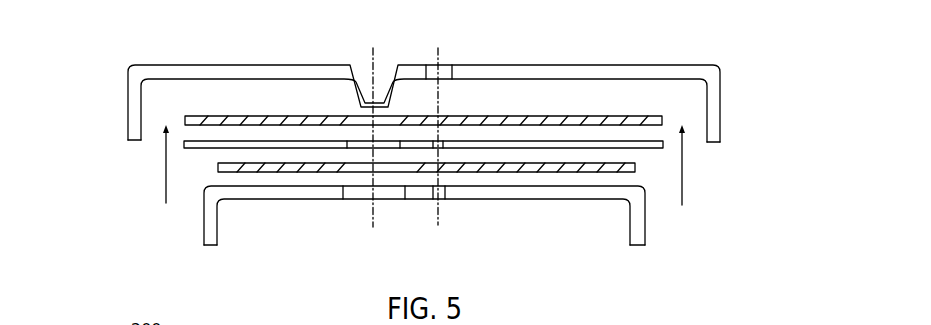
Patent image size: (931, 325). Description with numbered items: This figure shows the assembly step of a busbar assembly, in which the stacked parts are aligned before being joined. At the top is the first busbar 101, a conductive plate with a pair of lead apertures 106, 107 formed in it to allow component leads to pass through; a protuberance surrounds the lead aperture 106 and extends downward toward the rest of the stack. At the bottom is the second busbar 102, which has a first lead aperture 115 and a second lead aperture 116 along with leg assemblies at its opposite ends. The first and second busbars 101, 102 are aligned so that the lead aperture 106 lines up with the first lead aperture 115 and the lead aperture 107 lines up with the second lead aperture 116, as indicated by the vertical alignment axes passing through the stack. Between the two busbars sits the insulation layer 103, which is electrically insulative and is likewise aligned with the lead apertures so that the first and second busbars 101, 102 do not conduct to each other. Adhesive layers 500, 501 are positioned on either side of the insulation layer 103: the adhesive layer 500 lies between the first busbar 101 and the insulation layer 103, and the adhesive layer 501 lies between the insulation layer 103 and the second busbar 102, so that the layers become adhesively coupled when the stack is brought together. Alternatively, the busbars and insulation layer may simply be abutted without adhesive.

The first busbar 101 is at (110, 74).
The second busbar 102 is at (186, 211).
The insulation layer 103 is at (186, 149).
The lead aperture 106 is at (364, 52).
The lead aperture 107 is at (448, 50).
The first lead aperture 115 is at (360, 214).
The second lead aperture 116 is at (447, 214).
The adhesive layer 500 is at (597, 116).
The adhesive layer 501 is at (636, 164).